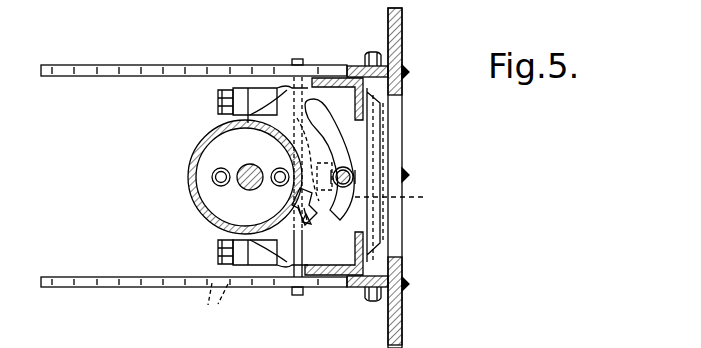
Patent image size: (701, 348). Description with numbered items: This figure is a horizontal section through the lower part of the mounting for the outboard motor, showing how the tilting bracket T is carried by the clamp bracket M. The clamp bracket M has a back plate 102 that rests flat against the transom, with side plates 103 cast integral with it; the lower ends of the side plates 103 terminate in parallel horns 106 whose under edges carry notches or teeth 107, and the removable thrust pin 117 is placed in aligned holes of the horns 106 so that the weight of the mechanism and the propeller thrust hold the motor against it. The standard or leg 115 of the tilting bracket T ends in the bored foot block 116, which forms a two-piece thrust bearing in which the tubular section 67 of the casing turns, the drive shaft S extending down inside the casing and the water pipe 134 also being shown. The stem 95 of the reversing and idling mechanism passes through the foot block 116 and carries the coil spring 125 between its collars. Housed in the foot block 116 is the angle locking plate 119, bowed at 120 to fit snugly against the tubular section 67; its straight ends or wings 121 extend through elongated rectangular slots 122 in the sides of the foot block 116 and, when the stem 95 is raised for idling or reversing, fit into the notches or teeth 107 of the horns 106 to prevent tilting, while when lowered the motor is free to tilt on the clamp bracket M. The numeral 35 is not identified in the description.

The horns 106 is at (125, 65).
The back plate 102 is at (403, 240).
The standard or leg 115 is at (338, 67).
The side plates 103 is at (357, 63).
The straight ends or wings 121 is at (302, 61).
The foot block 116 is at (280, 118).
The elongated rectangular slots 122 is at (312, 278).
The tubular section 67 is at (212, 148).
The drive shaft S is at (244, 190).
The pin 35 is at (278, 168).
The pipe 134 is at (210, 187).
The coil spring 125 is at (340, 143).
The stem 95 is at (354, 177).
The angle locking plate 119 is at (311, 215).
The centrally curved or bowed portion 120 is at (317, 236).
The tilting bracket T is at (362, 245).
The clamp bracket M is at (403, 193).
The removable thrust pin 117 is at (399, 199).
The notches or teeth 107 is at (213, 303).